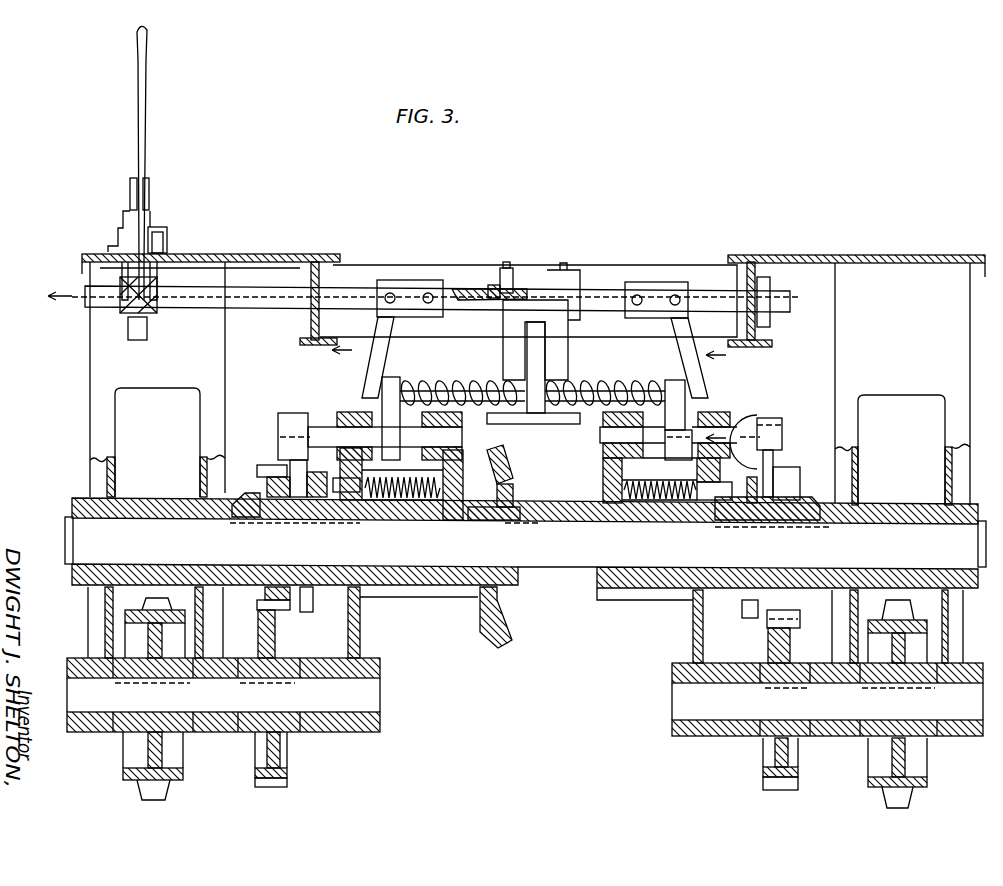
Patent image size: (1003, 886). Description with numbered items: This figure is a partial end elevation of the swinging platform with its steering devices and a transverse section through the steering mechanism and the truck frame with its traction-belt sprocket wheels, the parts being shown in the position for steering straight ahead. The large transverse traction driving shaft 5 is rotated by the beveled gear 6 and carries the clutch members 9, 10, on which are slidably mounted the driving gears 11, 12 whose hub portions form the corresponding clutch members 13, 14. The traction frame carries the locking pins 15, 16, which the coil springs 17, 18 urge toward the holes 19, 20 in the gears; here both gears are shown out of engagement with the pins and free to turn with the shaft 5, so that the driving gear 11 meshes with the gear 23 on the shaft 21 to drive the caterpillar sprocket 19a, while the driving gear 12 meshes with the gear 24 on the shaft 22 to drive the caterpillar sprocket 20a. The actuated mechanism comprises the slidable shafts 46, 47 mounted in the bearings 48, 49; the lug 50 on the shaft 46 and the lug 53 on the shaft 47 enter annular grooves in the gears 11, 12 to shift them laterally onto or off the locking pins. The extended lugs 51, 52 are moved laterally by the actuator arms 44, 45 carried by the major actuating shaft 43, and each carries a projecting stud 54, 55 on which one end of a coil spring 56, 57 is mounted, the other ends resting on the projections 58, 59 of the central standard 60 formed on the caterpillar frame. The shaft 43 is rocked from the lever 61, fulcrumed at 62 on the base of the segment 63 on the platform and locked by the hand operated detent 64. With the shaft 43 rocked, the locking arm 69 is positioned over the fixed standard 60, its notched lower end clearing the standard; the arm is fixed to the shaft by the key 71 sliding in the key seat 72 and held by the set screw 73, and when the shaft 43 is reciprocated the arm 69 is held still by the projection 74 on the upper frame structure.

The traction driving shaft 5 is at (565, 560).
The beveled gear 6 is at (500, 636).
The clutch member 9 is at (255, 492).
The clutch member 10 is at (812, 497).
The driving gear 11 is at (253, 472).
The driving gear 12 is at (797, 467).
The clutch member 13 is at (241, 470).
The clutch member 14 is at (314, 497).
The locking pin 15 is at (352, 500).
The locking pin 16 is at (712, 500).
The coil spring 17 is at (425, 500).
The coil spring 18 is at (665, 500).
The hole 19 is at (337, 492).
The caterpillar sprocket 19a is at (123, 777).
The hole 20 is at (752, 495).
The caterpillar sprocket 20a is at (868, 784).
The shaft 21 is at (370, 694).
The shaft 22 is at (678, 694).
The gear 23 is at (280, 780).
The gear 24 is at (760, 772).
The major actuating shaft 43 is at (268, 300).
The actuator arm 44 is at (368, 366).
The actuator arm 45 is at (707, 372).
The slidable shaft 46 is at (325, 422).
The slidable shaft 47 is at (752, 437).
The bearing 48 is at (462, 440).
The bearing 49 is at (603, 446).
The lug 50 is at (298, 482).
The extended lug 51 is at (393, 390).
The extended lug 52 is at (680, 418).
The lug 53 is at (745, 425).
The projecting stud 54 is at (413, 390).
The projecting stud 55 is at (645, 390).
The coil spring 56 is at (452, 390).
The coil spring 57 is at (612, 390).
The projection 58 is at (490, 390).
The projection 59 is at (575, 390).
The central standard 60 is at (535, 372).
The lever 61 is at (139, 95).
The fulcrum 62 is at (118, 237).
The segment 63 is at (160, 228).
The hand operated detent 64 is at (130, 190).
The locking arm 69 is at (503, 330).
The key 71 is at (492, 285).
The key seat 72 is at (475, 292).
The set screw 73 is at (509, 262).
The projection 74 is at (545, 272).